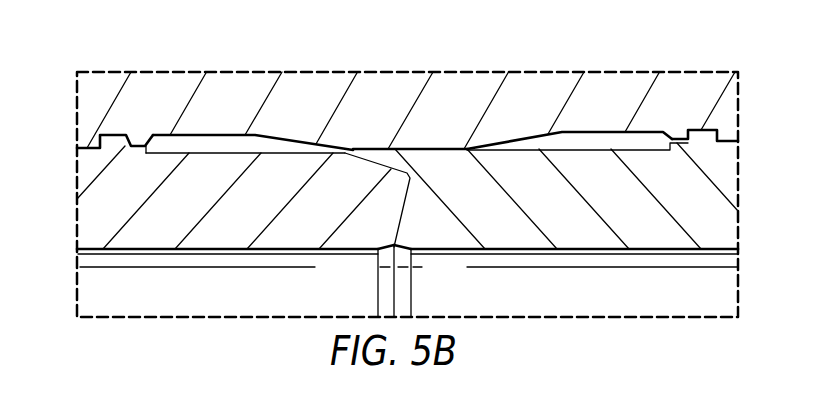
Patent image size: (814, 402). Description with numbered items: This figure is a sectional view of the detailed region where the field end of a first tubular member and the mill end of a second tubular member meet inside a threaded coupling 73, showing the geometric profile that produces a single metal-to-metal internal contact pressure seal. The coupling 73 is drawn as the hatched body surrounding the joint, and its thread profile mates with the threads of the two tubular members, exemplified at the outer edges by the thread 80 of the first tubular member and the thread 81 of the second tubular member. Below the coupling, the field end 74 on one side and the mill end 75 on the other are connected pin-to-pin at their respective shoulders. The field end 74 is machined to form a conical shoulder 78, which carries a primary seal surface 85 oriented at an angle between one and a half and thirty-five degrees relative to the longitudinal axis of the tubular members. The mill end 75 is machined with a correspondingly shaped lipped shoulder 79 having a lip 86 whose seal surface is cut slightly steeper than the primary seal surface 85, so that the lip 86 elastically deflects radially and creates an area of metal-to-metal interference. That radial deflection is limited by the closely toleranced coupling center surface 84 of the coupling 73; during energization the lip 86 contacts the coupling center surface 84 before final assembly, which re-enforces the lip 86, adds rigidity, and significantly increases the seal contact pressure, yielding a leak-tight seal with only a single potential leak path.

The threaded coupling 73 is at (322, 88).
The field end 74 is at (218, 235).
The mill end 75 is at (572, 235).
The conical shoulder 78 is at (383, 205).
The lipped shoulder 79 is at (417, 207).
The thread 80 is at (117, 139).
The thread 81 is at (708, 129).
The coupling center surface 84 is at (428, 147).
The primary seal surface 85 is at (379, 168).
The lip 86 is at (375, 153).